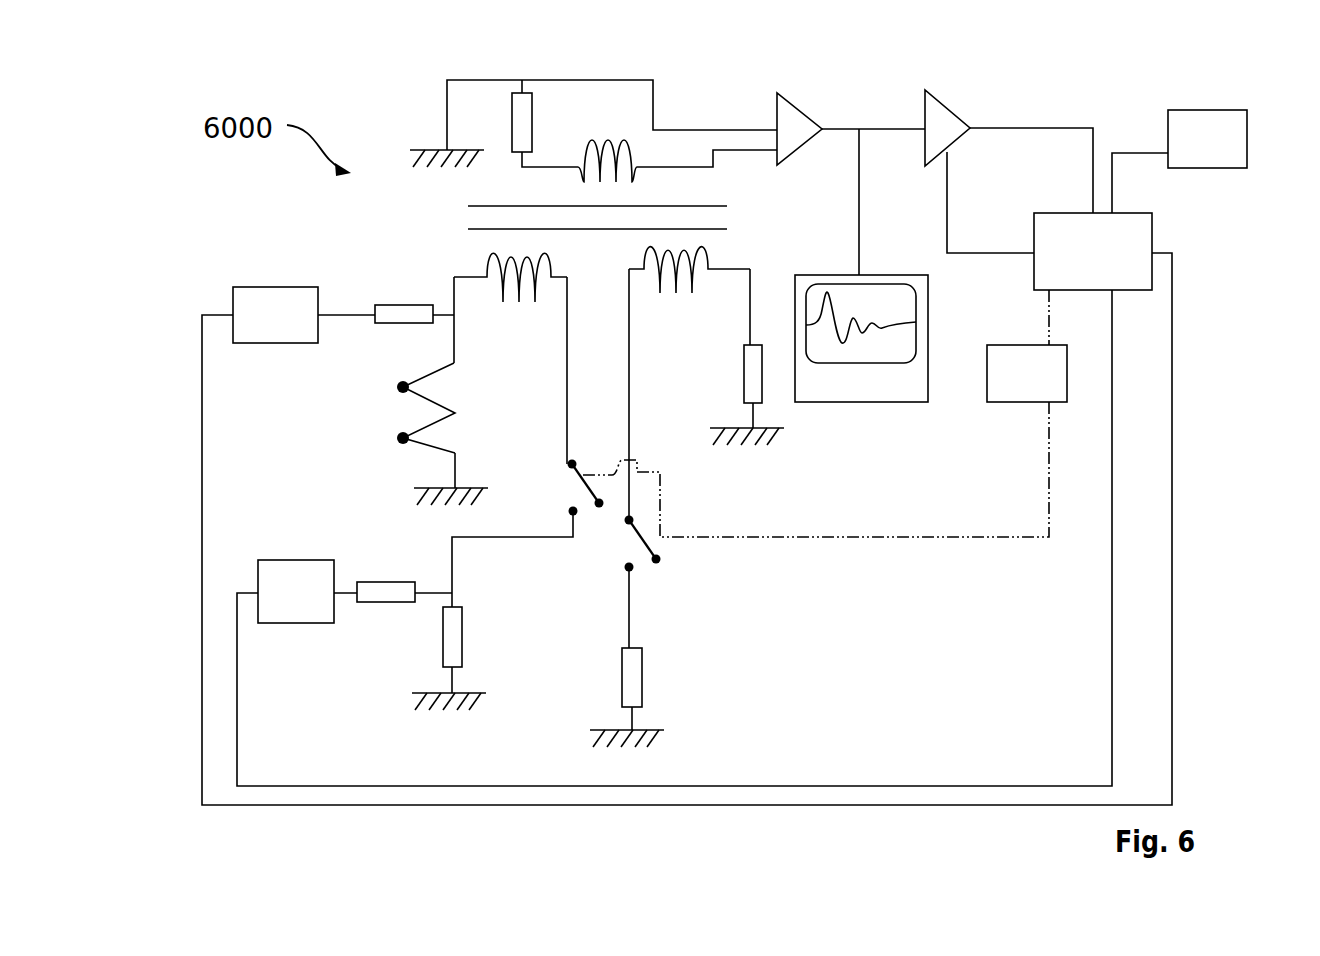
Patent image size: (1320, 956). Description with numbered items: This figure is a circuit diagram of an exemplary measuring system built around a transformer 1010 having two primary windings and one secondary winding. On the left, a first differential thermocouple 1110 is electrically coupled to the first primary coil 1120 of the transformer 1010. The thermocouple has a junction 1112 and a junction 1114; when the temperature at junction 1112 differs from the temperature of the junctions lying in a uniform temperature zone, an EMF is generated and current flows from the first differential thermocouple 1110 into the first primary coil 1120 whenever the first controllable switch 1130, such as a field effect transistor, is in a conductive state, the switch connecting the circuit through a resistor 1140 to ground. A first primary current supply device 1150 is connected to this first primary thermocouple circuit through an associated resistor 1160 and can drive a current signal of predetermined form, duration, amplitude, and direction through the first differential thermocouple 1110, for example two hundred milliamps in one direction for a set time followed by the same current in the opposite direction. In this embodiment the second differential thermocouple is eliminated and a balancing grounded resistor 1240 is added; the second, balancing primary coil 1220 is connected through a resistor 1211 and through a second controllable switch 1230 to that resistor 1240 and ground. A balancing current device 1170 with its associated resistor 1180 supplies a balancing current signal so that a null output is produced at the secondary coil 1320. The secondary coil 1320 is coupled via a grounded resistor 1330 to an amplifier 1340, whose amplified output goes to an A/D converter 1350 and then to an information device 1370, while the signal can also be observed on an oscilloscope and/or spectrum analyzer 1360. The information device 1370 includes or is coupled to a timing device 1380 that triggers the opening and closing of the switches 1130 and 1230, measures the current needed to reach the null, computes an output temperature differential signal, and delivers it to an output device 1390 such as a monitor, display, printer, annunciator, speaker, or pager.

The transformer 1010 is at (573, 221).
The first differential thermocouple 1110 is at (459, 408).
The thermocouple junction 1112 is at (372, 397).
The thermocouple junction 1114 is at (372, 451).
The first primary coil 1120 is at (510, 294).
The first controllable switch 1130 is at (567, 488).
The resistor 1140 is at (484, 637).
The first primary current supply device 1150 is at (275, 315).
The resistor 1160 is at (404, 300).
The balancing current device 1170 is at (296, 591).
The resistor 1180 is at (386, 609).
The resistor 1211 is at (722, 374).
The second primary coil 1220 is at (689, 289).
The second controllable switch 1230 is at (675, 546).
The balancing grounded resistor 1240 is at (606, 677).
The secondary coil 1320 is at (634, 170).
The grounded resistor 1330 is at (519, 123).
The amplifier 1340 is at (807, 142).
The A/D converter 1350 is at (967, 135).
The oscilloscope and/or spectrum analyzer 1360 is at (861, 338).
The information device 1370 is at (1093, 251).
The timing device 1380 is at (1027, 373).
The output device 1390 is at (1207, 139).